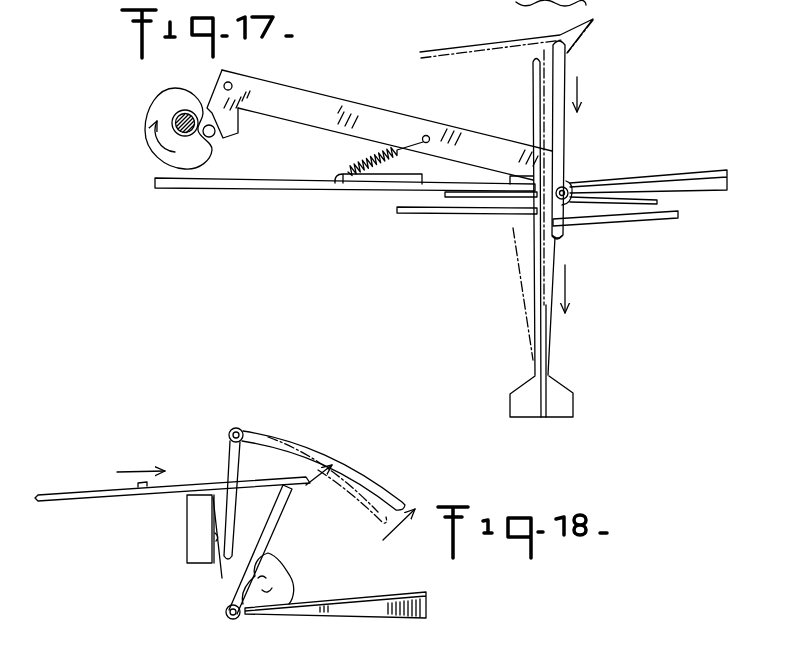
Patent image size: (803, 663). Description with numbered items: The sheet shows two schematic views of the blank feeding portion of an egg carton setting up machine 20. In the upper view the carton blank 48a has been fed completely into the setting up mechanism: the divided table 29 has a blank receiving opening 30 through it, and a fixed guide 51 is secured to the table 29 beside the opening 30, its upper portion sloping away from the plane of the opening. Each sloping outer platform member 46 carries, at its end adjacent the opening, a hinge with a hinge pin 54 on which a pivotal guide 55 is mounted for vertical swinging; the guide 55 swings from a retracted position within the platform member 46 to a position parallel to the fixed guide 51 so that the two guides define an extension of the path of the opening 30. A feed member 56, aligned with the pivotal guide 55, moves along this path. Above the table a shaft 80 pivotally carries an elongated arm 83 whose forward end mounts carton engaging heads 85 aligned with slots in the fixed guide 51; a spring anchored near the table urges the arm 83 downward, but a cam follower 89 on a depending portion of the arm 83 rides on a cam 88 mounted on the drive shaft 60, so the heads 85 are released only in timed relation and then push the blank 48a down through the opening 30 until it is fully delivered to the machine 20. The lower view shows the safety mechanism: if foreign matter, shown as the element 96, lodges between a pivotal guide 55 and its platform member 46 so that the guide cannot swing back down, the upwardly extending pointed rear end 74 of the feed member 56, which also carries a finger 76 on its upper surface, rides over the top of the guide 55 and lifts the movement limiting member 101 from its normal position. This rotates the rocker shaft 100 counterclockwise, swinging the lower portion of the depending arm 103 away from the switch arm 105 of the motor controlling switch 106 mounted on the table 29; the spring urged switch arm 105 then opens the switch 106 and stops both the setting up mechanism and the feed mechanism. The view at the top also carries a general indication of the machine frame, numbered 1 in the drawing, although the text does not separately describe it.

In FIG. 17, the machine frame reference 1 is at (583, 26).
In FIG. 17, the egg carton setting up machine 20 is at (575, 395).
In FIG. 17, the divided table 29 is at (230, 189).
In FIG. 17, the blank receiving opening 30 is at (533, 204).
In FIG. 17, the outer platform member 46 is at (705, 158).
In FIG. 18, the outer platform member 46 is at (400, 579).
In FIG. 17, the carton blank 48a is at (560, 326).
In FIG. 17, the fixed guide 51 is at (533, 90).
In FIG. 17, the hinge pin 54 is at (567, 190).
In FIG. 18, the hinge pin 54 is at (226, 614).
In FIG. 17, the pivotal guide 55 is at (566, 128).
In FIG. 18, the pivotal guide 55 is at (272, 533).
In FIG. 17, the feed member 56 is at (466, 47).
In FIG. 18, the feed member 56 is at (74, 492).
In FIG. 17, the drive shaft 60 is at (187, 112).
In FIG. 18, the pointed rear end 74 is at (337, 466).
In FIG. 18, the finger 76 is at (136, 483).
In FIG. 17, the shaft 80 is at (232, 85).
In FIG. 17, the elongated arm 83 is at (337, 84).
In FIG. 17, the carton engaging head 85 is at (560, 238).
In FIG. 17, the cam 88 is at (144, 132).
In FIG. 17, the cam follower 89 is at (216, 132).
In FIG. 18, the element 96 is at (290, 578).
In FIG. 18, the rocker shaft 100 is at (238, 428).
In FIG. 18, the movement limiting member 101 is at (303, 443).
In FIG. 18, the depending arm 103 is at (229, 458).
In FIG. 18, the switch arm 105 is at (218, 573).
In FIG. 18, the motor controlling switch 106 is at (187, 528).